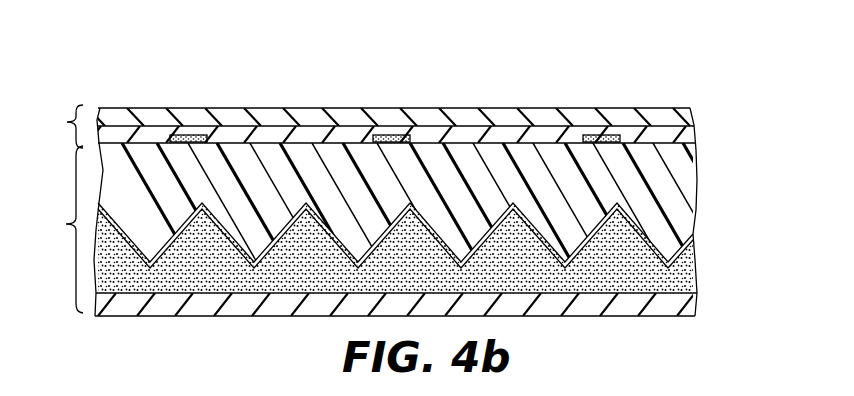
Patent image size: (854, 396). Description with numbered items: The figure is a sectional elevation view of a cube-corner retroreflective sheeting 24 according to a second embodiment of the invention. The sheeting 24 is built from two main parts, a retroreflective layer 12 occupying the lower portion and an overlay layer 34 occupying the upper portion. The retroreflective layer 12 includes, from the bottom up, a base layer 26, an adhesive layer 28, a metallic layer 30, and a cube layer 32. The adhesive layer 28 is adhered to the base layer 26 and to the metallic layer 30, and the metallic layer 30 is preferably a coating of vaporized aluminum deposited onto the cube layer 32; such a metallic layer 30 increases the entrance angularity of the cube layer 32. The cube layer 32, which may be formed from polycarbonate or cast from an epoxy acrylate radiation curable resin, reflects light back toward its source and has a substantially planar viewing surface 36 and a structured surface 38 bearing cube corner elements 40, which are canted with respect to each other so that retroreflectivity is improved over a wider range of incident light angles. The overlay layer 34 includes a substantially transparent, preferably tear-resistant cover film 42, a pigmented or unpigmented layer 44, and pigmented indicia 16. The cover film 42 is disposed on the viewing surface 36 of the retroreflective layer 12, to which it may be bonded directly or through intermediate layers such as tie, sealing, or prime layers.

The retroreflective layer 12 is at (58, 229).
The pigmented indicia 16 is at (185, 135).
The cube-corner retroreflective sheeting 24 is at (650, 72).
The base layer 26 is at (617, 317).
The adhesive layer 28 is at (682, 279).
The metallic layer 30 is at (643, 209).
The cube layer 32 is at (665, 171).
The overlay layer 34 is at (58, 126).
The viewing surface 36 is at (113, 147).
The structured surface 38 is at (687, 257).
The cube corner elements 40 is at (283, 227).
The cover film 42 is at (663, 108).
The layer 44 is at (673, 137).